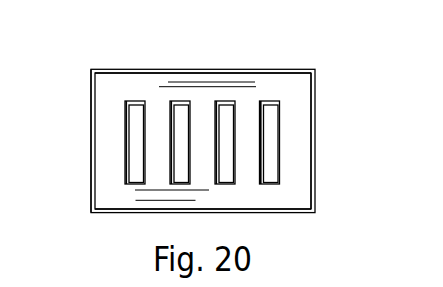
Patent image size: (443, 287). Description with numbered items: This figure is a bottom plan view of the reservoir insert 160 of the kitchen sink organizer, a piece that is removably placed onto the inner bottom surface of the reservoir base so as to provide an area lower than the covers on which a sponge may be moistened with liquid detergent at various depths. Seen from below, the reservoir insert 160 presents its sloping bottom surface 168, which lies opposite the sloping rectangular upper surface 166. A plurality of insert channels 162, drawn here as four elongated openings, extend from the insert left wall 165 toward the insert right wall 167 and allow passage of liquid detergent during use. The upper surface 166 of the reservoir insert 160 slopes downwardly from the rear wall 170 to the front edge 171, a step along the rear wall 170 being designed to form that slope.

The reservoir insert 160 is at (276, 56).
The insert channels 162 is at (275, 121).
The insert left wall 165 is at (152, 214).
The upper surface 166 is at (325, 137).
The insert right wall 167 is at (118, 68).
The bottom surface 168 is at (145, 97).
The rear wall 170 is at (318, 175).
The front edge 171 is at (90, 184).